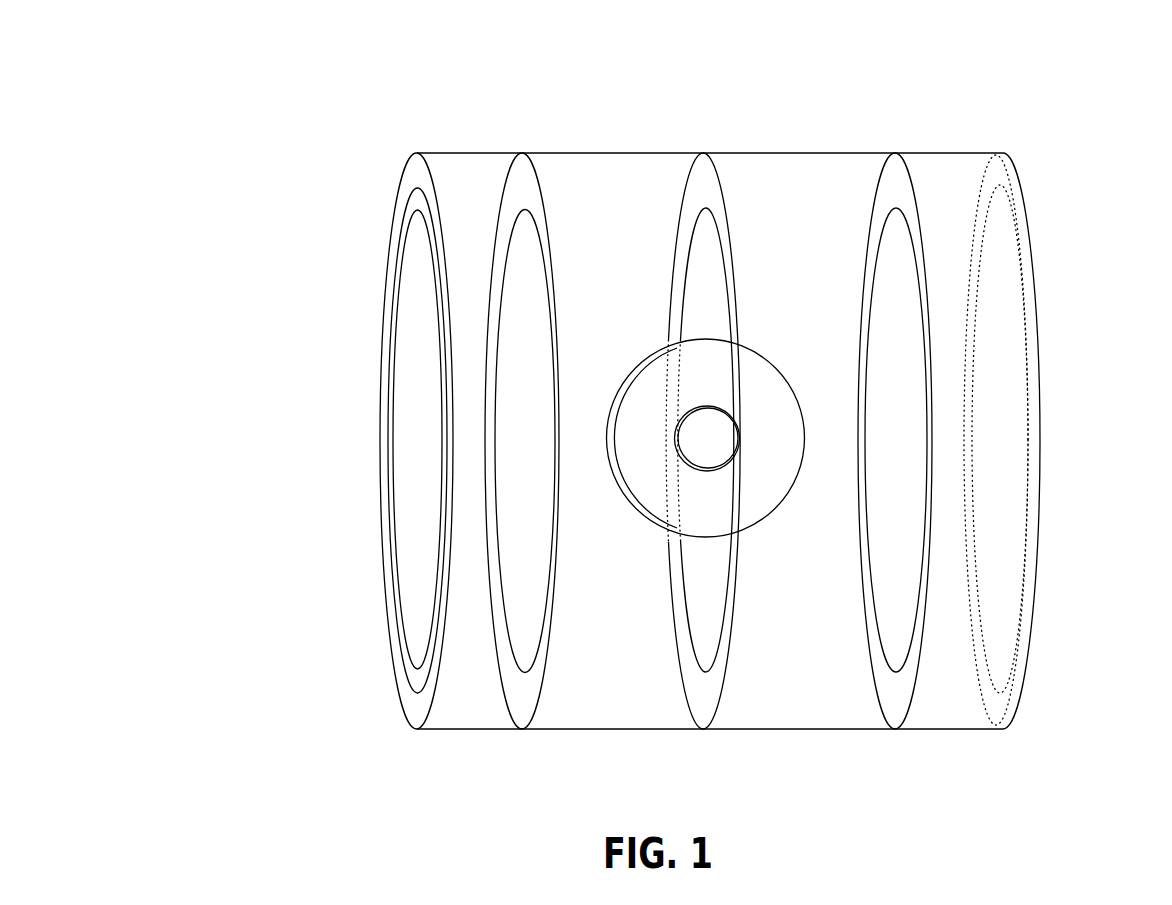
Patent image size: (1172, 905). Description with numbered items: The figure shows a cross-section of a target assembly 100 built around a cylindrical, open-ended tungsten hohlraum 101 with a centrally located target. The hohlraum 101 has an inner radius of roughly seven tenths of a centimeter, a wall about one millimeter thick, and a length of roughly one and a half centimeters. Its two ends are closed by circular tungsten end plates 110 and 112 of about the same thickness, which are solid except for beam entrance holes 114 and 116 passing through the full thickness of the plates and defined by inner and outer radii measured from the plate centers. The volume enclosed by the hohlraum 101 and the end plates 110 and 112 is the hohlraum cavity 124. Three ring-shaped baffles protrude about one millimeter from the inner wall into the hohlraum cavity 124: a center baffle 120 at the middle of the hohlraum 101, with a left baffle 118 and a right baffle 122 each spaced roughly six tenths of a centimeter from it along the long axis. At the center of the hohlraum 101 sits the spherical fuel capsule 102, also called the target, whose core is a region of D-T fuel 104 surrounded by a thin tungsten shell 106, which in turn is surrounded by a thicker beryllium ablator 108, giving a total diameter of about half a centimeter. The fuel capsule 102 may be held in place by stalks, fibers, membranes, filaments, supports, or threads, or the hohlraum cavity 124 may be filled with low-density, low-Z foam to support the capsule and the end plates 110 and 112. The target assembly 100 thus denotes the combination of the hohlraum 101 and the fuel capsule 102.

The target assembly 100 is at (209, 118).
The cylindrical hohlraum 101 is at (578, 152).
The fuel capsule 102 is at (648, 325).
The D-T fuel 104 is at (727, 440).
The tungsten shell 106 is at (690, 470).
The beryllium ablator 108 is at (762, 468).
The end plate 110 is at (405, 468).
The end plate 112 is at (998, 550).
The beam entrance hole 114 is at (415, 202).
The beam entrance hole 116 is at (1020, 255).
The left baffle 118 is at (525, 707).
The center baffle 120 is at (709, 707).
The right baffle 122 is at (889, 697).
The hohlraum cavity 124 is at (957, 207).